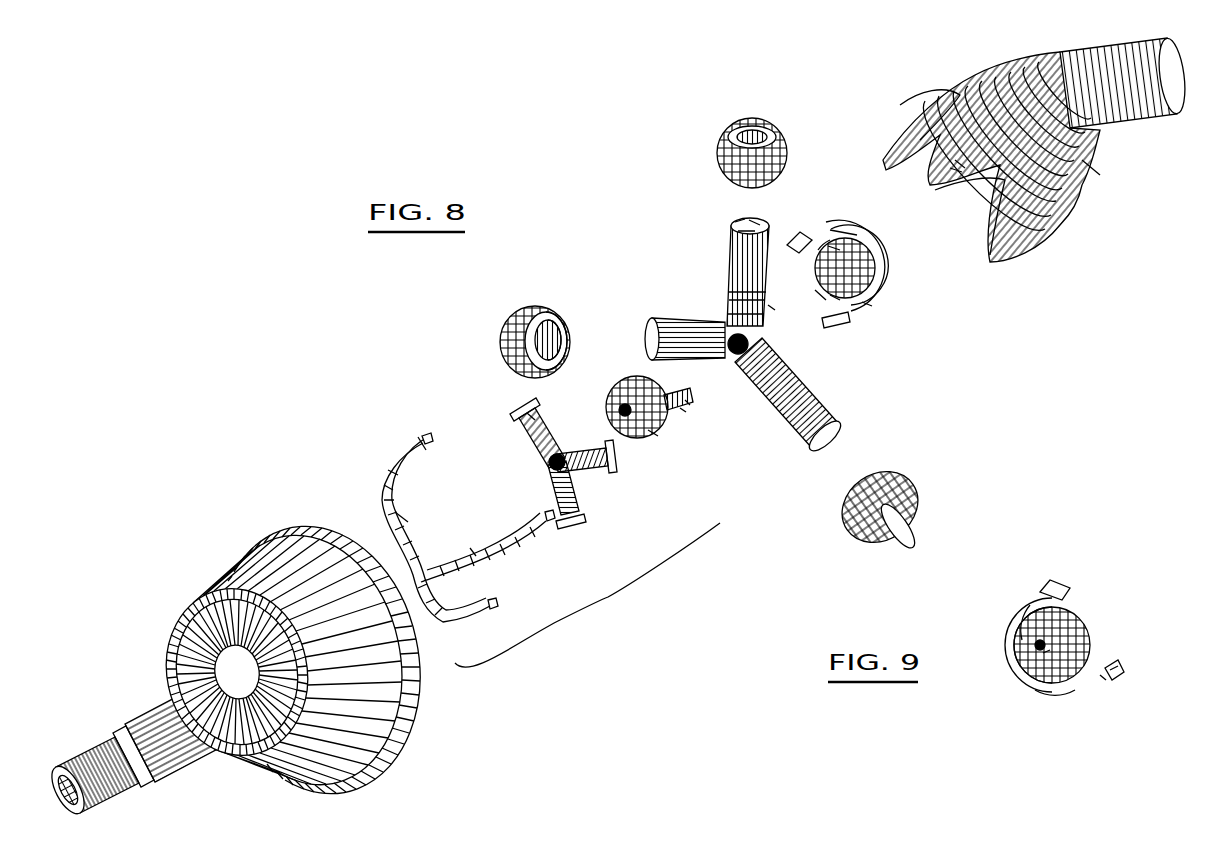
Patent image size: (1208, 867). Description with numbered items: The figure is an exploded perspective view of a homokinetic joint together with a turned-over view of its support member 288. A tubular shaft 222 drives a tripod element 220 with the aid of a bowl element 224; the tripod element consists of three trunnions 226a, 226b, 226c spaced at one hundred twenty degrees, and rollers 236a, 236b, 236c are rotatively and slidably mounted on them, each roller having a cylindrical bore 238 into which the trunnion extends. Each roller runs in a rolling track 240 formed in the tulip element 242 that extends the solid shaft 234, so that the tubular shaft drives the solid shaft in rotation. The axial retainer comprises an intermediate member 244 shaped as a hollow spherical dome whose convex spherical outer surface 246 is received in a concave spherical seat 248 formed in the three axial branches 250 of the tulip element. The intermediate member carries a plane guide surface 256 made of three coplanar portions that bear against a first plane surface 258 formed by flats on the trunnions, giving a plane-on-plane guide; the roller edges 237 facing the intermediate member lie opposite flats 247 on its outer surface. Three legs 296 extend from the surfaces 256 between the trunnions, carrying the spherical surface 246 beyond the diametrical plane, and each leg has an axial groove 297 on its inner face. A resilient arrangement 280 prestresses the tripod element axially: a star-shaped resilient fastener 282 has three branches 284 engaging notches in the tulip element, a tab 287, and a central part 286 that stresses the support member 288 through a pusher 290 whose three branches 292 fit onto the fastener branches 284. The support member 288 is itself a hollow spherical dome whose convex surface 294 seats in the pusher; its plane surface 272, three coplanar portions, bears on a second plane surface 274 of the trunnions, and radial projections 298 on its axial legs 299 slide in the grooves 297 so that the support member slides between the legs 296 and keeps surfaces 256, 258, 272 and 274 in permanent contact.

In FIG. 8, the tripod element 220 is at (732, 358).
In FIG. 8, the tubular shaft 222 is at (141, 720).
In FIG. 8, the bowl element 224 is at (225, 582).
In FIG. 8, the trunnion 226a is at (733, 250).
In FIG. 8, the trunnion 226b is at (655, 327).
In FIG. 8, the trunnion 226c is at (807, 433).
In FIG. 8, the solid shaft 234 is at (1015, 168).
In FIG. 8, the roller 236a is at (788, 152).
In FIG. 8, the roller 236b is at (532, 307).
In FIG. 8, the roller 236c is at (908, 483).
In FIG. 8, the roller edge 237 is at (570, 347).
In FIG. 8, the cylindrical bore 238 is at (550, 333).
In FIG. 8, the rolling track 240 is at (940, 117).
In FIG. 8, the tulip element 242 is at (1107, 163).
In FIG. 8, the intermediate member 244 is at (867, 279).
In FIG. 8, the convex spherical outer surface 246 is at (890, 267).
In FIG. 8, the flat 247 is at (857, 233).
In FIG. 8, the concave spherical seat 248 is at (953, 170).
In FIG. 8, the axial branches 250 is at (957, 167).
In FIG. 8, the plane guide surface 256 is at (833, 247).
In FIG. 8, the first plane surface 258 is at (770, 307).
In FIG. 9, the plane surface 272 is at (1017, 617).
In FIG. 8, the second plane surface 274 is at (730, 292).
In FIG. 8, the resilient arrangement 280 is at (587, 595).
In FIG. 8, the star-shaped resilient fastener 282 is at (386, 549).
In FIG. 8, the branches 284 is at (398, 523).
In FIG. 8, the central part 286 is at (440, 548).
In FIG. 8, the clip tab 287 is at (418, 453).
In FIG. 8, the support member 288 is at (600, 403).
In FIG. 9, the support member 288 is at (1068, 643).
In FIG. 8, the pusher 290 is at (537, 460).
In FIG. 8, the branches 292 is at (527, 417).
In FIG. 8, the convex spherical outer surface 294 is at (653, 436).
In FIG. 9, the convex spherical outer surface 294 is at (1020, 668).
In FIG. 8, the legs 296 is at (800, 235).
In FIG. 8, the axial groove 297 is at (833, 297).
In FIG. 8, the radial projection 298 is at (687, 403).
In FIG. 9, the radial projection 298 is at (1060, 582).
In FIG. 8, the axial leg 299 is at (682, 410).
In FIG. 9, the axial leg 299 is at (1103, 677).